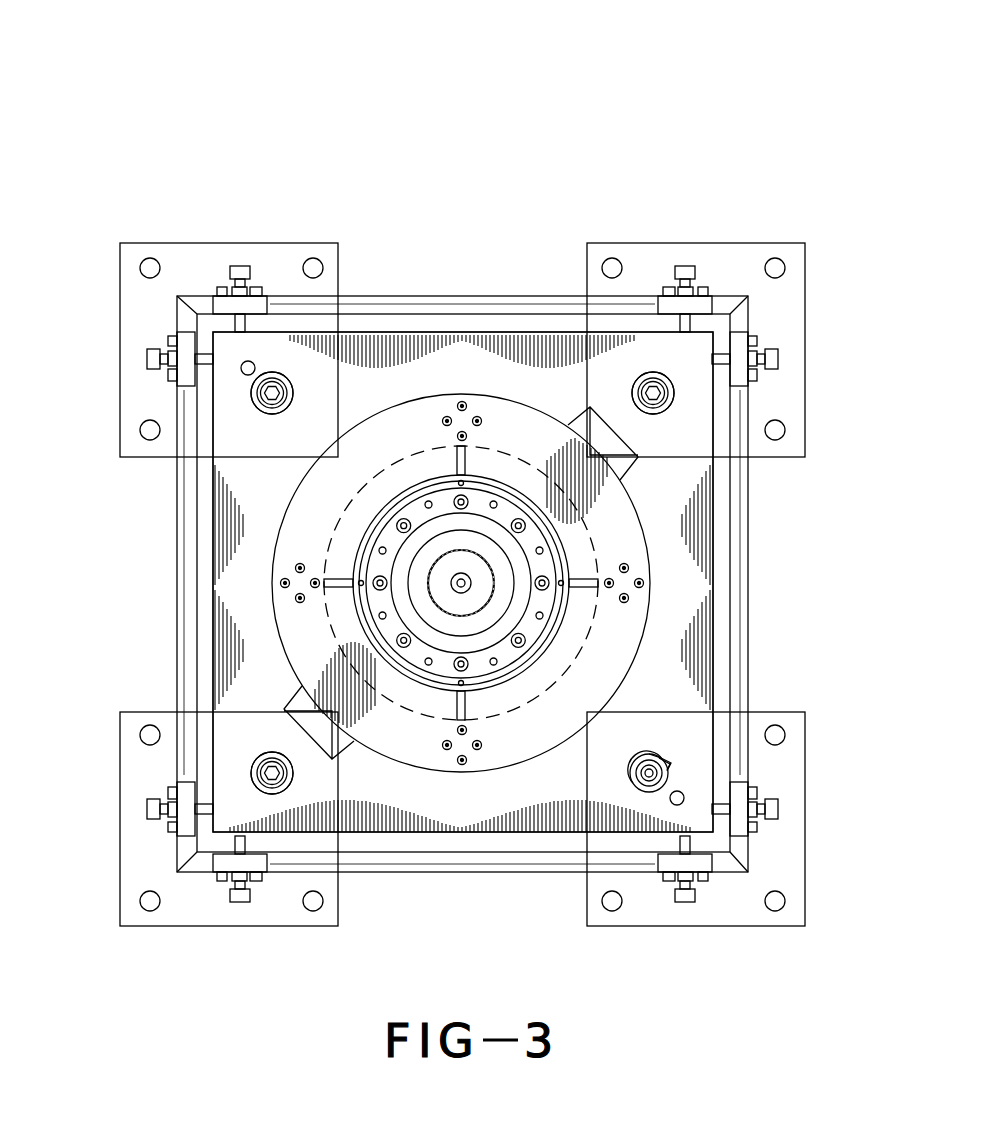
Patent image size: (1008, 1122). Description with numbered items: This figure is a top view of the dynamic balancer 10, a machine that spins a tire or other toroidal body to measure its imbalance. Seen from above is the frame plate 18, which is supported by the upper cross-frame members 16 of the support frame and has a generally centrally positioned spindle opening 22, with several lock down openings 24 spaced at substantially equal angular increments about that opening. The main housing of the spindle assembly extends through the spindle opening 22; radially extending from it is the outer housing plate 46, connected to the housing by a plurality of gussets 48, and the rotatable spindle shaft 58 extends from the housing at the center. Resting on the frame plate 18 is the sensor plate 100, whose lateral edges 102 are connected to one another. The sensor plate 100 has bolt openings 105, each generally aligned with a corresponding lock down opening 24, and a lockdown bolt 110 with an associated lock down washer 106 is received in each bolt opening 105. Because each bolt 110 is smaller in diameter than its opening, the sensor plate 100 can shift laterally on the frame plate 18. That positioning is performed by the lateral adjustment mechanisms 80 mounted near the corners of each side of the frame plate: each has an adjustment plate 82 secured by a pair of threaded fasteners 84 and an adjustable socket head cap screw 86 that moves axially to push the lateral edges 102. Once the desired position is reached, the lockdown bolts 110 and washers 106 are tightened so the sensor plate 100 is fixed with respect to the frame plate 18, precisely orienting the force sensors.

The dynamic balancer 10 is at (222, 115).
The cross-frame members 16 is at (423, 303).
The frame plate 18 is at (357, 328).
The spindle opening 22 is at (578, 630).
The lock down openings 24 is at (652, 790).
The outer housing plate 46 is at (340, 480).
The gussets 48 is at (338, 583).
The spindle shaft 58 is at (440, 397).
The lateral adjustment mechanisms 80 is at (160, 328).
The adjustment plate 82 is at (735, 378).
The threaded fasteners 84 is at (758, 377).
The socket head cap screw 86 is at (775, 358).
The sensor plate 100 is at (473, 327).
The lateral edges 102 is at (569, 334).
The bolt openings 105 is at (663, 787).
The lock down washer 106 is at (258, 395).
The lockdown bolt 110 is at (276, 385).